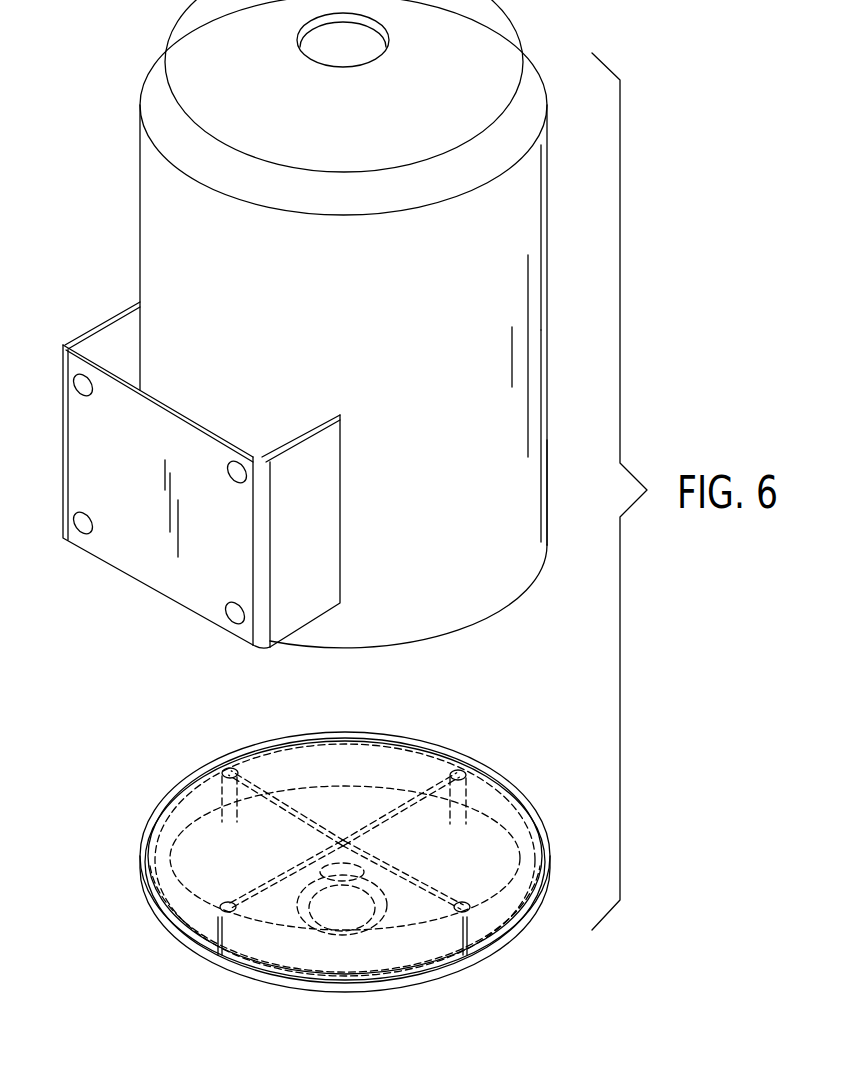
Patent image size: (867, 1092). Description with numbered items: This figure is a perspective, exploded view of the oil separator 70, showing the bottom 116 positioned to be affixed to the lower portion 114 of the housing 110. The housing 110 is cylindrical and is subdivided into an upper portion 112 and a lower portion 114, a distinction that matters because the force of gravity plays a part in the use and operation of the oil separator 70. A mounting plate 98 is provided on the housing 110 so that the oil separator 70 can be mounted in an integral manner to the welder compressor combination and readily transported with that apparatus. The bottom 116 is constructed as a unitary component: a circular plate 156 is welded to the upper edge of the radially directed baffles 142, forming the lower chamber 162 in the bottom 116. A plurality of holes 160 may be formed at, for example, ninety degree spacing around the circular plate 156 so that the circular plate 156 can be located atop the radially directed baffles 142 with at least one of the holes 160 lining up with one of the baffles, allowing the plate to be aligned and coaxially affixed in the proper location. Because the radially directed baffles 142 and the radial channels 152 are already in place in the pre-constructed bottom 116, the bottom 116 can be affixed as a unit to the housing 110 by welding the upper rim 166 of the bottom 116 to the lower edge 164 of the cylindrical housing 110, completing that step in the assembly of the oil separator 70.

The oil separator 70 is at (118, 252).
The mounting plate 98 is at (142, 530).
The housing 110 is at (547, 318).
The upper portion 112 is at (517, 228).
The lower portion 114 is at (518, 480).
The bottom 116 is at (507, 938).
The radially directed baffles 142 is at (272, 823).
The radial channels 152 is at (237, 878).
The circular plate 156 is at (530, 863).
The holes 160 is at (230, 770).
The lower chamber 162 is at (201, 849).
The lower edge 164 is at (515, 598).
The upper rim 166 is at (547, 868).